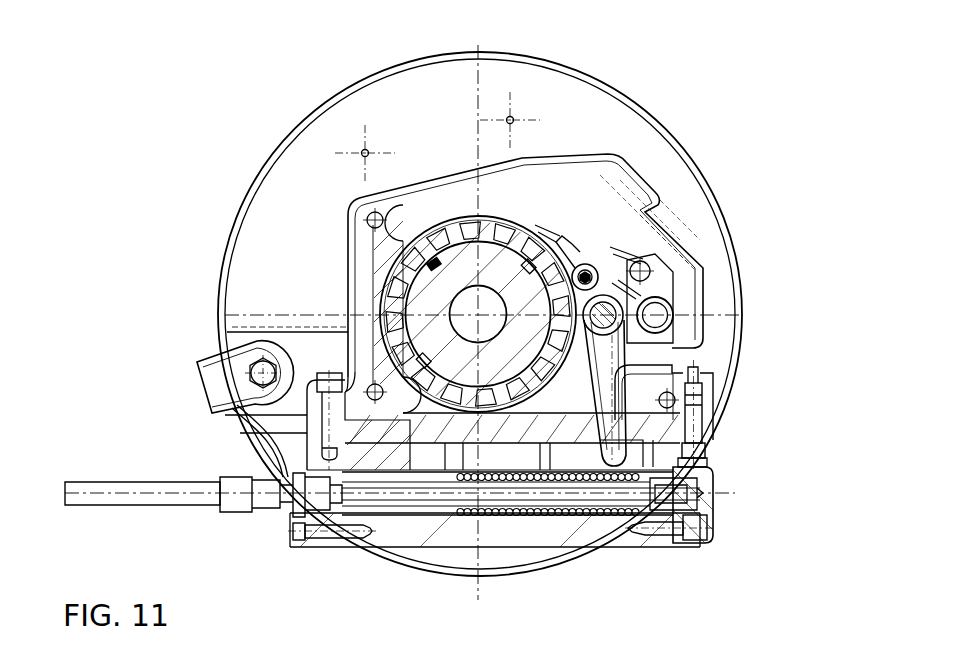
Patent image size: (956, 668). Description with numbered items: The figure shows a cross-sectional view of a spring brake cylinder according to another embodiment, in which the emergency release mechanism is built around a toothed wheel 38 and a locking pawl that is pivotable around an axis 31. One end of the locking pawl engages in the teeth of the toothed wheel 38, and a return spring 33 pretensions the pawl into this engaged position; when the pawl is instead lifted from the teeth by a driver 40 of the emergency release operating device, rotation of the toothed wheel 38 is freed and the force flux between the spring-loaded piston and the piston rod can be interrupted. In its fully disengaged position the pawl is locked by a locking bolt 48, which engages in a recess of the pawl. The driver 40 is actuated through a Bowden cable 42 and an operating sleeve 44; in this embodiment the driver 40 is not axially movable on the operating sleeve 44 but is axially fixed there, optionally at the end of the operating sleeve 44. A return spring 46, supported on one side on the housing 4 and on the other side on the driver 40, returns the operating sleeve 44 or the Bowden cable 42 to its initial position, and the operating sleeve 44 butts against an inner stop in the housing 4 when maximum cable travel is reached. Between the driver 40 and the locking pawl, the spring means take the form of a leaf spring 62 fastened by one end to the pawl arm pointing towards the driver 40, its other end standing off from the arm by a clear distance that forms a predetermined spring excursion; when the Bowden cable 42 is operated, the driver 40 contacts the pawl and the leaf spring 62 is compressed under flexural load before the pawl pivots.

The housing 4 is at (327, 547).
The axis 31 is at (673, 263).
The return spring 33 is at (620, 372).
The toothed wheel 38 is at (458, 232).
The driver 40 is at (710, 440).
The Bowden cable 42 is at (388, 547).
The operating sleeve 44 is at (619, 516).
The return spring 46 is at (508, 516).
The locking bolt 48 is at (592, 266).
The leaf spring 62 is at (692, 365).